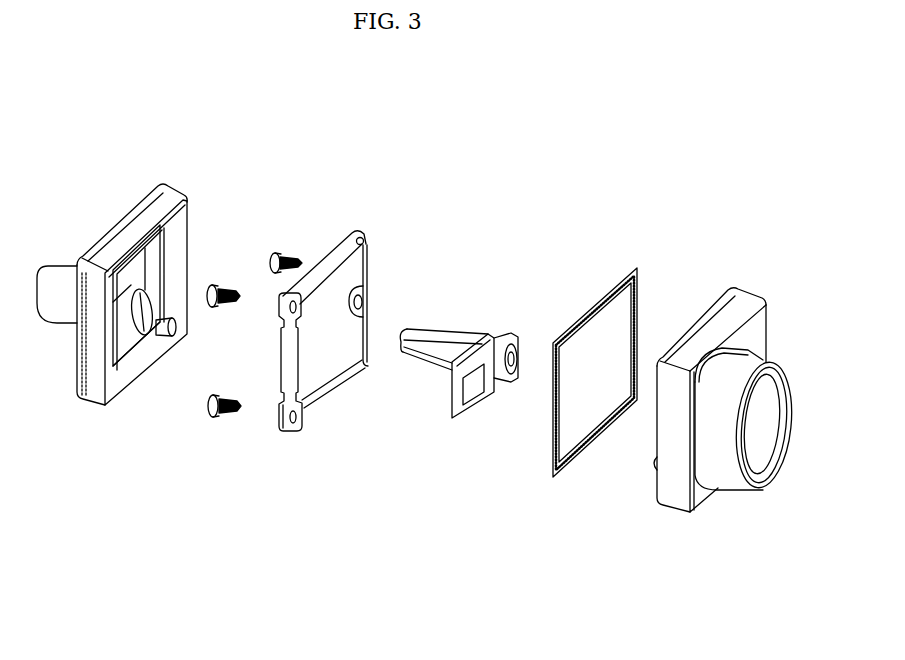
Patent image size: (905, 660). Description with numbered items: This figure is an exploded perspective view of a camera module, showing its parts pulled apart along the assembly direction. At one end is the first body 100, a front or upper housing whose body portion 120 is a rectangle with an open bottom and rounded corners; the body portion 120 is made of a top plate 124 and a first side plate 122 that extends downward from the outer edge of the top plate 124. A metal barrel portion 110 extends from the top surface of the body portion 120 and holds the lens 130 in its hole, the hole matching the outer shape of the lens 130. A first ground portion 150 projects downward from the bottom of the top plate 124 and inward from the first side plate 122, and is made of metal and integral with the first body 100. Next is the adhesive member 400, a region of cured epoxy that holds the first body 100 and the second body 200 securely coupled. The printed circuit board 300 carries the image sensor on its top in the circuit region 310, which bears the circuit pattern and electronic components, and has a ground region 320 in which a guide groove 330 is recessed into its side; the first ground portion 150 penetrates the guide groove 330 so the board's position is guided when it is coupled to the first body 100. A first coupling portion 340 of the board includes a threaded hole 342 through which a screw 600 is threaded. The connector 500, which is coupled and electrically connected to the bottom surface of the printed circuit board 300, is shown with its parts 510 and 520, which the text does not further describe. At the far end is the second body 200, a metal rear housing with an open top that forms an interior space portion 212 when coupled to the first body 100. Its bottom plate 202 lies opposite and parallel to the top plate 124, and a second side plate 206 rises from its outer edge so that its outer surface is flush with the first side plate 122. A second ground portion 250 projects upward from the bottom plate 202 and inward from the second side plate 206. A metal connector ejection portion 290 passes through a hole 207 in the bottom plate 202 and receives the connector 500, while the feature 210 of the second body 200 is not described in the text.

The first body 100 is at (690, 534).
The barrel portion 110 is at (729, 475).
The body portion 120 is at (733, 290).
The first side plate 122 is at (709, 327).
The top plate 124 is at (756, 330).
The lens 130 is at (755, 421).
The first ground portion 150 is at (650, 467).
The second body 200 is at (156, 172).
The bottom plate 202 is at (110, 300).
The second side plate 206 is at (123, 232).
The hole 207 is at (146, 290).
The side wall of cover 210 is at (93, 388).
The space portion 212 is at (123, 333).
The second ground portion 250 is at (176, 333).
The connector ejection portion 290 is at (55, 265).
The printed circuit board 300 is at (364, 208).
The circuit region 310 is at (350, 265).
The ground region 320 is at (335, 252).
The guide groove 330 is at (281, 418).
The first coupling portion 340 is at (364, 288).
The threaded hole 342 is at (363, 297).
The adhesive member 400 is at (621, 266).
The connector 500 is at (443, 425).
The connector frame 510 is at (475, 402).
The connector arm 520 is at (425, 357).
The screw 600 is at (227, 287).